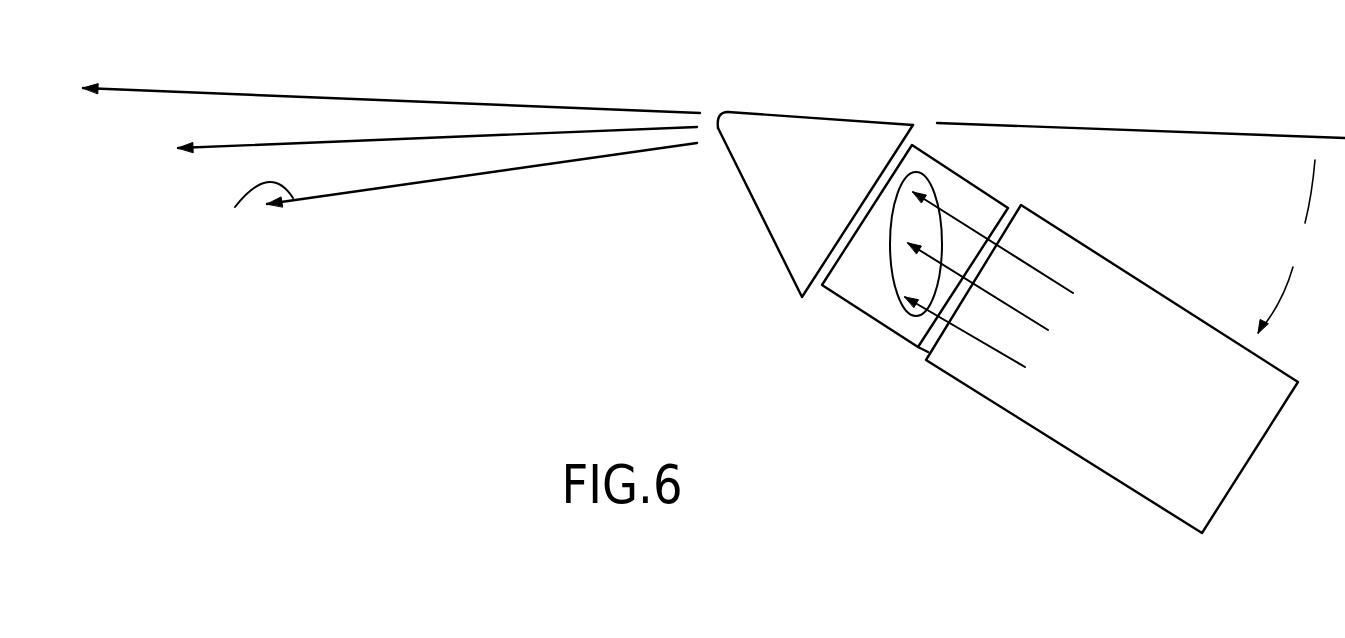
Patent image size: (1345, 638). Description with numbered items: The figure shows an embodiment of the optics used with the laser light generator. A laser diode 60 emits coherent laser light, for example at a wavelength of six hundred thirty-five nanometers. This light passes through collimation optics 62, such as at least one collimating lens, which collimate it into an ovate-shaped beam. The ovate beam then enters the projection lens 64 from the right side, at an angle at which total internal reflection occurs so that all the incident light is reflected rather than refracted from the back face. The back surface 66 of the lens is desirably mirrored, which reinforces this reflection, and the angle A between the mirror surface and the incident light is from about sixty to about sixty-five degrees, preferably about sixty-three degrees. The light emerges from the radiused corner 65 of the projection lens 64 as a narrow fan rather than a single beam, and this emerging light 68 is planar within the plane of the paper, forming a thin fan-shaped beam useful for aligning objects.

The laser diode 60 is at (1095, 467).
The collimation optics 62 is at (975, 183).
The projection lens 64 is at (793, 242).
The radiused corner 65 is at (731, 132).
The back surface 66 is at (860, 118).
The light 68 is at (217, 150).
The angle A is at (1286, 246).